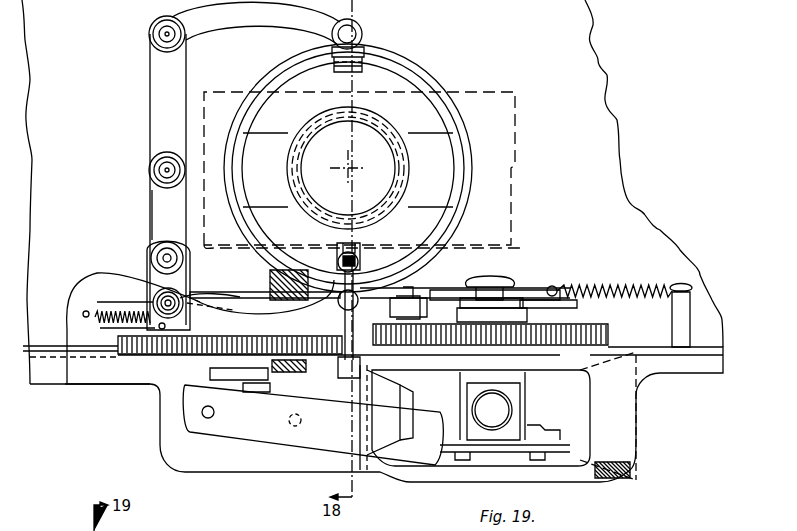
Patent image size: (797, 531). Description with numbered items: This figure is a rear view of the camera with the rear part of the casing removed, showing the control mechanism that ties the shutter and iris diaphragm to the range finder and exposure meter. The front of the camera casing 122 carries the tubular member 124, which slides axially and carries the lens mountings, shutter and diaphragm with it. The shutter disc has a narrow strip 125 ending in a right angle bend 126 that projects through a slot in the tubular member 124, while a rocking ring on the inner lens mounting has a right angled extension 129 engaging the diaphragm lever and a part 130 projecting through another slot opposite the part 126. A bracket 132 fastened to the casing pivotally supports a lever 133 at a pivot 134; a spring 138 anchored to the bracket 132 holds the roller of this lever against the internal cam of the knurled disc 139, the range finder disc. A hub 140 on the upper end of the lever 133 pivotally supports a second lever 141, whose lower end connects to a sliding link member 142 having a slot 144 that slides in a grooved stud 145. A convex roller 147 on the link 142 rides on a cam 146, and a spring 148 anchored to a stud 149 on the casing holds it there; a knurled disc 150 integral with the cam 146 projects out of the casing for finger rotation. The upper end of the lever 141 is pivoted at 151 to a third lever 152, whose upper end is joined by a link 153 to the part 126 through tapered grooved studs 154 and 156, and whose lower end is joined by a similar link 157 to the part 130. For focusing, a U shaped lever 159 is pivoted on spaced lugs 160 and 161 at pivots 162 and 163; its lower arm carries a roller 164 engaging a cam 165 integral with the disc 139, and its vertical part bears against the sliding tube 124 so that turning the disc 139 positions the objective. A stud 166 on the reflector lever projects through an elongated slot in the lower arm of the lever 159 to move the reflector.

The camera casing 122 is at (592, 41).
The tubular member 124 is at (415, 88).
The narrow strip 125 is at (356, 70).
The right angle bend 126 is at (366, 50).
The right angled extension 129 is at (368, 262).
The projecting part 130 is at (438, 276).
The bracket 132 is at (77, 280).
The lever 133 is at (192, 275).
The pivot 134 is at (153, 302).
The spring 138 is at (112, 324).
The knurled disc 139 is at (140, 356).
The hub 140 is at (152, 248).
The lever 141 is at (150, 210).
The sliding link member 142 is at (240, 292).
The slot 144 is at (468, 282).
The stud 145 is at (505, 276).
The cam 146 is at (577, 306).
The convex roller 147 is at (397, 310).
The spring 148 is at (622, 284).
The stud 149 is at (686, 318).
The knurled disc 150 is at (610, 336).
The pivot 151 is at (154, 171).
The lever 152 is at (150, 116).
The link 153 is at (252, 25).
The grooved stud 154 is at (150, 34).
The grooved stud 156 is at (358, 28).
The link 157 is at (257, 303).
The U shaped lever 159 is at (344, 326).
The lug 160 is at (338, 270).
The lug 161 is at (308, 366).
The pivot 162 is at (338, 248).
The pivot 163 is at (300, 376).
The roller 164 is at (235, 384).
The cam 165 is at (195, 372).
The stud 166 is at (258, 392).